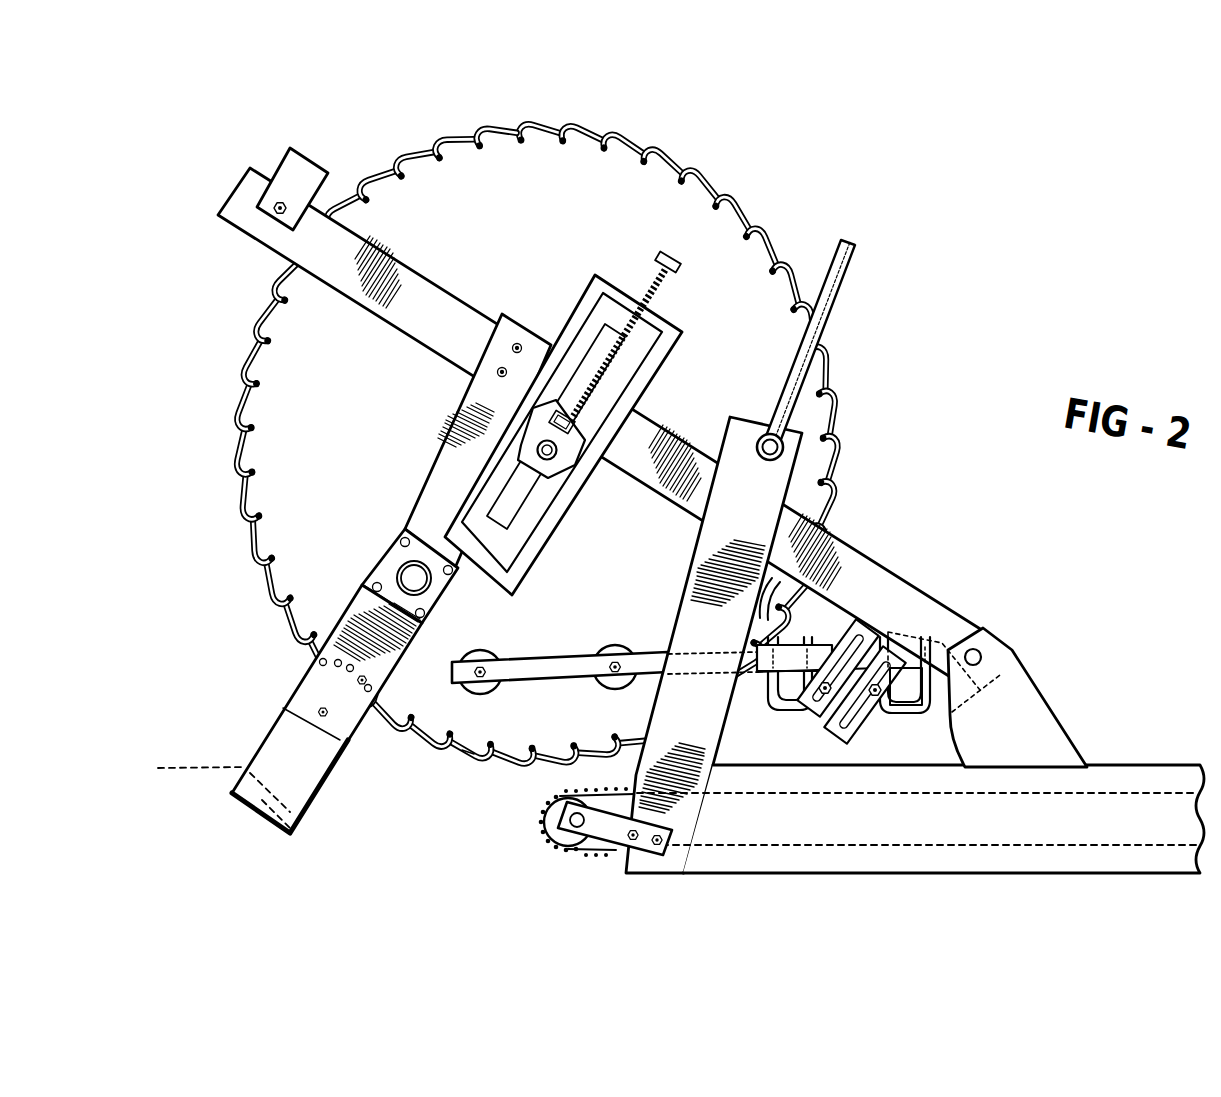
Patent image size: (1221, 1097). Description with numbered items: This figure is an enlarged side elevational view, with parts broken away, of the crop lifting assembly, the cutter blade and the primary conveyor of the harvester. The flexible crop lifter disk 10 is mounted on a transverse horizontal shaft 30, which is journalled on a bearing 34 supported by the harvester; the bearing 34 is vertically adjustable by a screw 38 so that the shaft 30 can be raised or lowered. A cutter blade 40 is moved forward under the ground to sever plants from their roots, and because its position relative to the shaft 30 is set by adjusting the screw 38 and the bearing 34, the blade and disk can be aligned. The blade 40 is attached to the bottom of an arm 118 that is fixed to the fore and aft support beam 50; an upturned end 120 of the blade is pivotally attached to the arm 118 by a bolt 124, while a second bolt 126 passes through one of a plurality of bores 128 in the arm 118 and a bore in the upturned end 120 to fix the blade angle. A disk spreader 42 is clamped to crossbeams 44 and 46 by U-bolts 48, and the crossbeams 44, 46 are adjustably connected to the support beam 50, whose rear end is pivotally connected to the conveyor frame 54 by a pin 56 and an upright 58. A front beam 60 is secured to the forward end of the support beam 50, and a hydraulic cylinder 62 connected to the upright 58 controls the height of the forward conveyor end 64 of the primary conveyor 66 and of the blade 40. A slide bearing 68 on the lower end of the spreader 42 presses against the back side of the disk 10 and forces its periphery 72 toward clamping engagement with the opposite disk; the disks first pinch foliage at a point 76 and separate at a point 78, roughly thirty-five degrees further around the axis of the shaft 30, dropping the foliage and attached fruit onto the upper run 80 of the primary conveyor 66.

The crop lifter disk 10 is at (486, 416).
The transverse horizontal shaft 30 is at (563, 387).
The bearing 34 is at (548, 460).
The screw 38 is at (663, 255).
The cutter blade 40 is at (283, 709).
The disk spreader 42 is at (530, 672).
The crossbeam 44 is at (913, 690).
The crossbeam 46 is at (787, 700).
The U-bolt 48 is at (765, 710).
The fore and aft support beam 50 is at (925, 593).
The conveyor frame 54 is at (1112, 872).
The pin 56 is at (1000, 628).
The upright 58 is at (680, 862).
The front beam 60 is at (320, 162).
The hydraulic cylinder 62 is at (850, 258).
The forward conveyor end 64 is at (545, 823).
The primary conveyor 66 is at (600, 852).
The slide bearing 68 is at (616, 645).
The periphery 72 is at (243, 440).
The point of first engagement 76 is at (468, 754).
The point of separation 78 is at (777, 617).
The upper run 80 is at (574, 791).
The arm 118 is at (410, 490).
The upturned end 120 is at (270, 765).
The bolt 124 is at (320, 712).
The second bolt 126 is at (358, 680).
The bore 128 is at (320, 662).